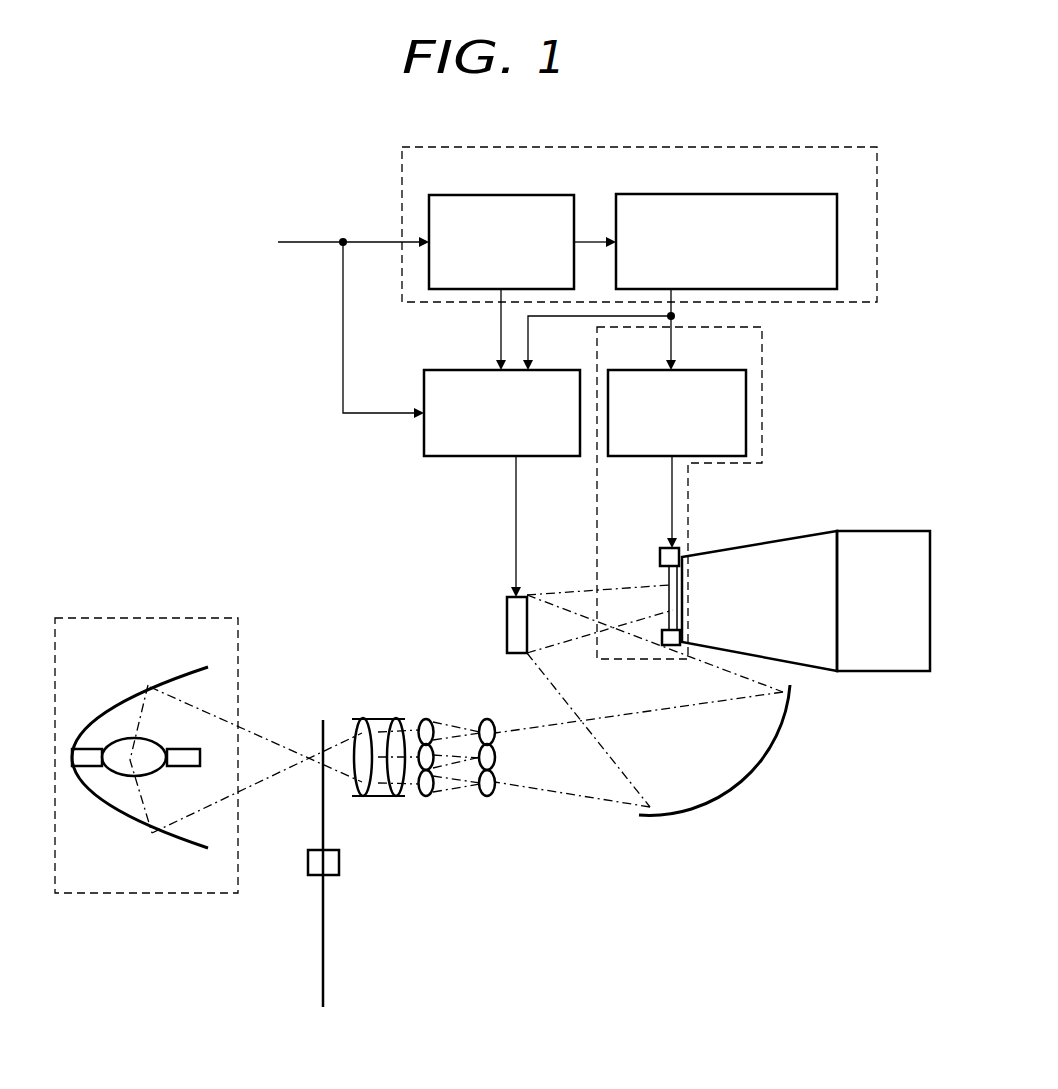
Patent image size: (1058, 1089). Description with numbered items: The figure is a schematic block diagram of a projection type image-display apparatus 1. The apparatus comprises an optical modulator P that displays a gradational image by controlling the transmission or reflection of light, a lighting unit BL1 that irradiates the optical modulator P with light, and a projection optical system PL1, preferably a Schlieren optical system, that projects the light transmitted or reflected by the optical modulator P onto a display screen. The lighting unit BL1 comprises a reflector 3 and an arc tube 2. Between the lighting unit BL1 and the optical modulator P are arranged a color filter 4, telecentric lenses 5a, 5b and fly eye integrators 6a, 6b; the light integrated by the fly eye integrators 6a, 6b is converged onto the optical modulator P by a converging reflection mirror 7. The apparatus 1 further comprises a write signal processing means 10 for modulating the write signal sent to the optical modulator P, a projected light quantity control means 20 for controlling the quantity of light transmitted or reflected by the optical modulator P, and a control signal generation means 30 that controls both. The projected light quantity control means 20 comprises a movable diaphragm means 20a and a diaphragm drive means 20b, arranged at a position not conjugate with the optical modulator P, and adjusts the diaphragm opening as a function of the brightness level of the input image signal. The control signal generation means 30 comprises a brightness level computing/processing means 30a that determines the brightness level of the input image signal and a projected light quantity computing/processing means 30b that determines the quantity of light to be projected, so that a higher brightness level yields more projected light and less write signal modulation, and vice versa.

The projection type image-display apparatus 1 is at (288, 339).
The arc tube 2 is at (154, 768).
The reflector 3 is at (166, 682).
The color filter 4 is at (330, 942).
The telecentric lens 5a is at (355, 728).
The telecentric lens 5b is at (388, 728).
The fly eye integrator 6a is at (430, 796).
The fly eye integrator 6b is at (490, 796).
The converging reflection mirror 7 is at (742, 770).
The write signal processing means 10 is at (476, 370).
The projected light quantity control means 20 is at (592, 520).
The movable diaphragm means 20a is at (657, 556).
The diaphragm drive means 20b is at (696, 373).
The control signal generation means 30 is at (773, 144).
The brightness level computing/processing means 30a is at (528, 195).
The projected light quantity computing/processing means 30b is at (804, 195).
The lighting unit BL1 is at (123, 618).
The optical modulator P is at (506, 614).
The projection optical system PL1 is at (803, 534).